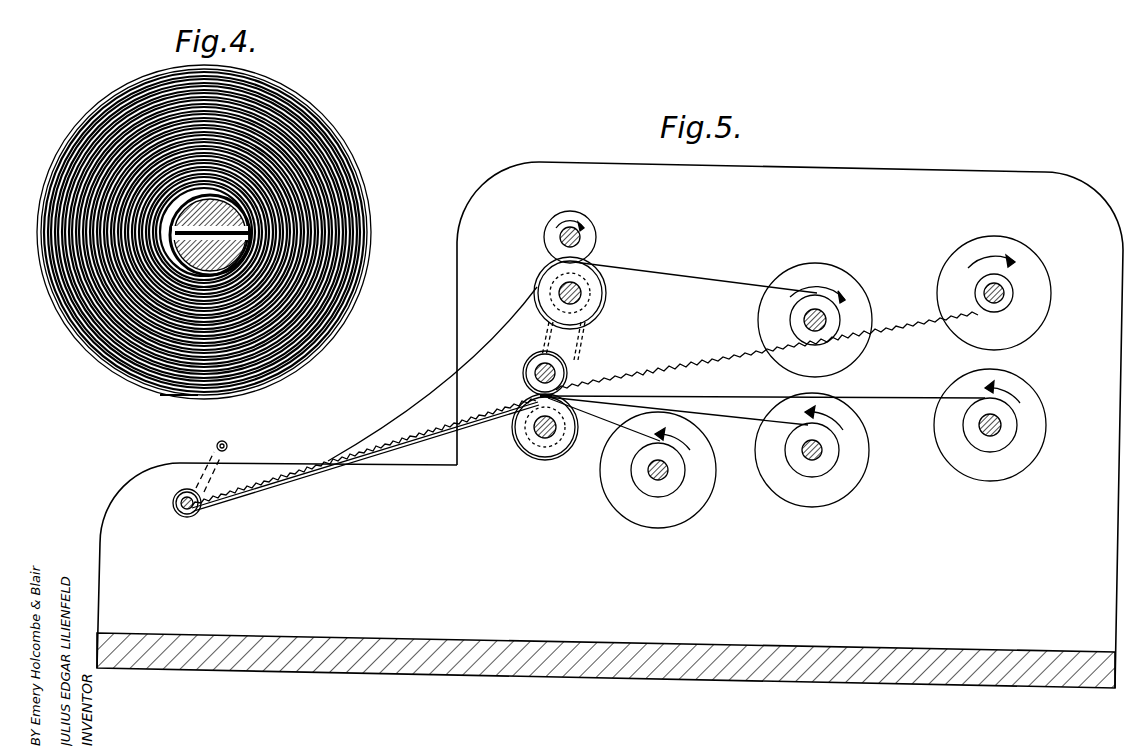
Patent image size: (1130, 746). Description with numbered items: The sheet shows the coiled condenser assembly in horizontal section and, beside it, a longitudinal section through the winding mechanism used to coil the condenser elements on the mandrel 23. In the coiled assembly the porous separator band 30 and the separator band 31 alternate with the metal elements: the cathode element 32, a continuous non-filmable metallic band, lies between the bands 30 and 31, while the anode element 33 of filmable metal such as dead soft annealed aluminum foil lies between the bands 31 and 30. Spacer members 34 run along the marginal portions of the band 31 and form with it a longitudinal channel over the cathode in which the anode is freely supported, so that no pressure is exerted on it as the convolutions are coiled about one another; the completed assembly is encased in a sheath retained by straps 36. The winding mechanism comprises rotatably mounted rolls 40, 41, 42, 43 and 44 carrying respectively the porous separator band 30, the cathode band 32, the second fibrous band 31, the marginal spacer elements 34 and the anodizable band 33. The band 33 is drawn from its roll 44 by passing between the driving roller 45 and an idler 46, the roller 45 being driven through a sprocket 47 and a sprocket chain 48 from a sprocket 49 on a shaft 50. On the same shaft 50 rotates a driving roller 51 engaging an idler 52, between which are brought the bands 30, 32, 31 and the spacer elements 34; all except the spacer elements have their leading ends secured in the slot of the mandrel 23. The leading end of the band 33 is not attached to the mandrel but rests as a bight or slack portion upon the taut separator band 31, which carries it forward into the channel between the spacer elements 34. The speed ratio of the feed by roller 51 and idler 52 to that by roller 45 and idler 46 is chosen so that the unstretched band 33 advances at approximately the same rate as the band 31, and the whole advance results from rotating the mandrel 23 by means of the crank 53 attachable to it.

In FIG. 5, the mandrel 23 is at (184, 516).
In FIG. 4, the porous separator band 30 is at (292, 357).
In FIG. 5, the porous separator band 30 is at (338, 466).
In FIG. 4, the separator band 31 is at (345, 308).
In FIG. 5, the separator band 31 is at (908, 402).
In FIG. 4, the cathode element 32 is at (368, 196).
In FIG. 5, the cathode element 32 is at (433, 427).
In FIG. 4, the anode element 33 is at (366, 250).
In FIG. 5, the anode element 33 is at (352, 441).
In FIG. 5, the spacer members 34 is at (405, 436).
In FIG. 4, the straps 36 is at (240, 392).
In FIG. 5, the roll 40 is at (668, 514).
In FIG. 5, the roll 41 is at (822, 498).
In FIG. 5, the roll 42 is at (1005, 472).
In FIG. 5, the roll 43 is at (1020, 256).
In FIG. 5, the roll 44 is at (815, 272).
In FIG. 5, the driving roller 45 is at (600, 297).
In FIG. 5, the idler 46 is at (582, 237).
In FIG. 5, the sprocket 47 is at (578, 328).
In FIG. 5, the sprocket chain 48 is at (571, 358).
In FIG. 5, the sprocket 49 is at (530, 396).
In FIG. 5, the shaft 50 is at (545, 438).
In FIG. 5, the driving roller 51 is at (514, 432).
In FIG. 5, the idler 52 is at (524, 374).
In FIG. 5, the crank 53 is at (214, 447).